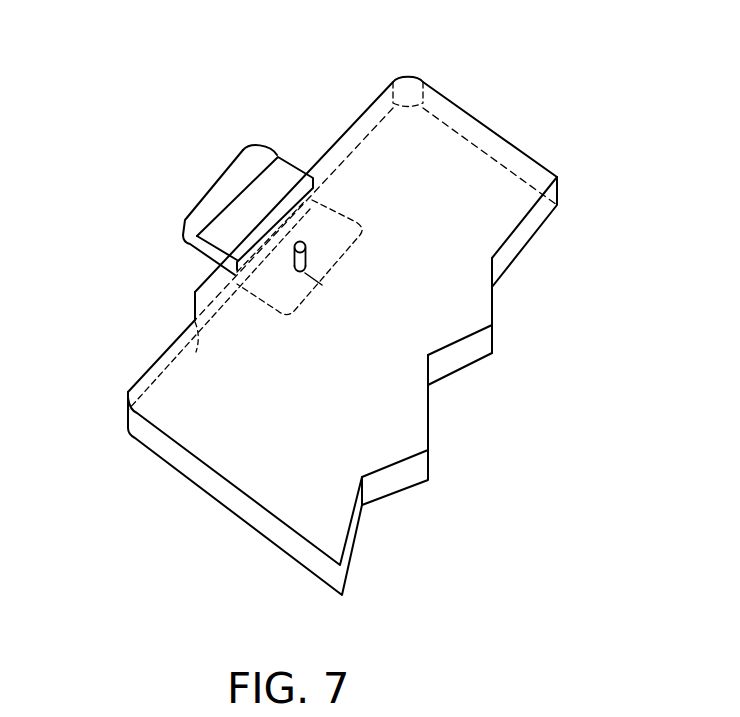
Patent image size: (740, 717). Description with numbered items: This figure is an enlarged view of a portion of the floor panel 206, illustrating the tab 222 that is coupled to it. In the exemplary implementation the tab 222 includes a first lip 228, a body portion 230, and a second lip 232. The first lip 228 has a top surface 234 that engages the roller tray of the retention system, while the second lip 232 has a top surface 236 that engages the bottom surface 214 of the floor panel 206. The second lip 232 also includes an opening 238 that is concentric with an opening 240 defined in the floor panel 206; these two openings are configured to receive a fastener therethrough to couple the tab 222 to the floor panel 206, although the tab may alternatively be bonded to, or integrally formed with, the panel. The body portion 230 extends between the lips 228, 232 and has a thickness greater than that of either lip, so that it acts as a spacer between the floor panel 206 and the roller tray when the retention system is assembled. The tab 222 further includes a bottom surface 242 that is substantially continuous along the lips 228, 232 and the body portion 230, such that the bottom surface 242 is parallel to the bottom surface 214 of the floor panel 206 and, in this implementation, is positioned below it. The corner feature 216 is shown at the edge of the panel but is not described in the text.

The floor panel 206 is at (414, 361).
The bottom surface 214 is at (182, 458).
The corner notch 216 is at (377, 99).
The tab 222 is at (158, 119).
The first lip 228 is at (194, 223).
The body portion 230 is at (283, 172).
The second lip 232 is at (290, 292).
The top surface 234 is at (243, 172).
The top surface 236 is at (363, 224).
The opening 238 is at (323, 285).
The opening 240 is at (306, 243).
The bottom surface 242 is at (193, 252).